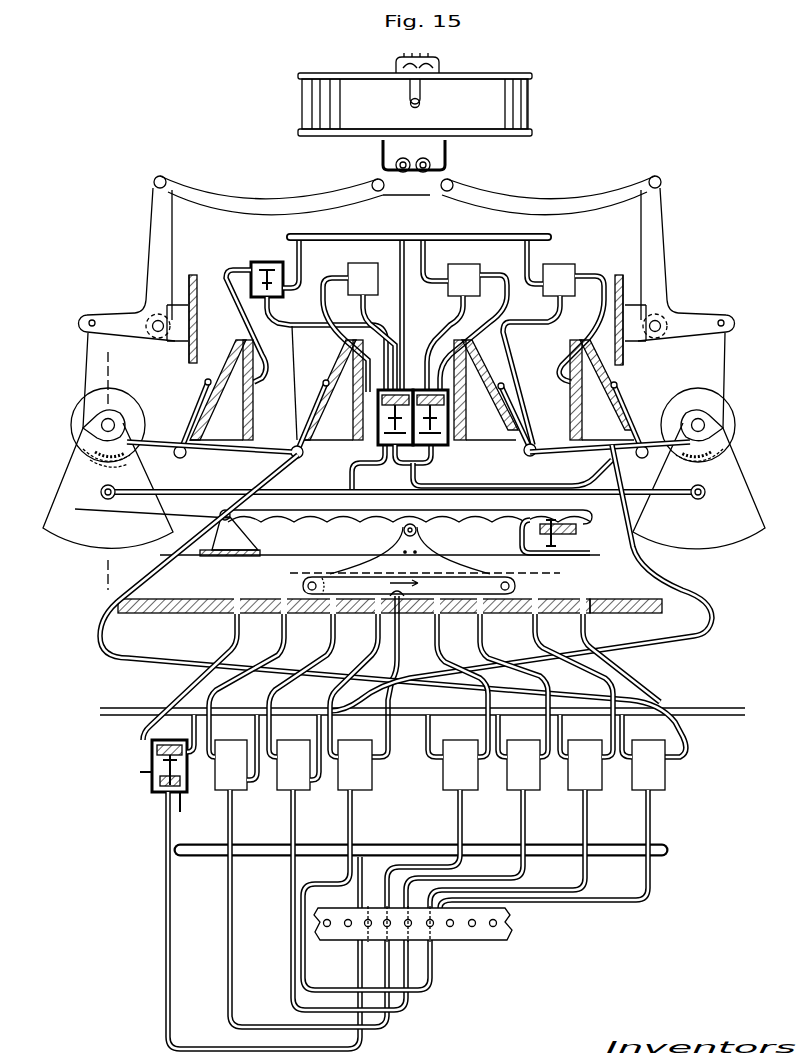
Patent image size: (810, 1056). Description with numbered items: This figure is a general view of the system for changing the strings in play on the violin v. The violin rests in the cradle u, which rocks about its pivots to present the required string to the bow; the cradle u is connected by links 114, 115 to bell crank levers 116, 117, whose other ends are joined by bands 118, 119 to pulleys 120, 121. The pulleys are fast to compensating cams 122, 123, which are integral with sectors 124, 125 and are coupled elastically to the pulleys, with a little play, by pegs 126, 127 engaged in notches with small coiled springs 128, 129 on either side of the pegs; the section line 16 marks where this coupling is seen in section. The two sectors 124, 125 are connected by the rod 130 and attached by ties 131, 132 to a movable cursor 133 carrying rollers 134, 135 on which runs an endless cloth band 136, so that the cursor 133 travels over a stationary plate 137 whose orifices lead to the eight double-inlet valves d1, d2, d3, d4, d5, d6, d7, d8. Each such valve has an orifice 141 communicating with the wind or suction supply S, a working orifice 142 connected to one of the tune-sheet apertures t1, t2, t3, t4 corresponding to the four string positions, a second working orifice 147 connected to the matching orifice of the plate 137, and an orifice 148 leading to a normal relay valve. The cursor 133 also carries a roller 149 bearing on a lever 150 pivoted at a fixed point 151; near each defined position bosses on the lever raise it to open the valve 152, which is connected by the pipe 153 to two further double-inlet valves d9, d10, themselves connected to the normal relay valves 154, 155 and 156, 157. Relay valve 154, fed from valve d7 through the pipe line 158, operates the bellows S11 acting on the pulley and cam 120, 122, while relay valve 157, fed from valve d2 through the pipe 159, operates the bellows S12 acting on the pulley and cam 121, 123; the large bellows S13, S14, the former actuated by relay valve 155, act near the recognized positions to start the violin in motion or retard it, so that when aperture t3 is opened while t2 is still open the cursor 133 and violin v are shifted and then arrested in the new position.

The violin v is at (455, 90).
The cradle u is at (446, 158).
The supply pipe S is at (444, 225).
The link 114 is at (280, 205).
The link 115 is at (545, 205).
The bell crank lever 116 is at (162, 268).
The bell crank lever 117 is at (655, 260).
The band 118 is at (87, 334).
The band 119 is at (726, 334).
The pulley 120 is at (88, 403).
The pulley 121 is at (720, 409).
The compensating cam 122 is at (88, 428).
The compensating cam 123 is at (720, 431).
The sector 124 is at (108, 485).
The sector 125 is at (699, 486).
The peg 126 is at (102, 459).
The peg 127 is at (712, 462).
The coiled spring 128 is at (92, 455).
The coiled spring 129 is at (700, 462).
The rod 130 is at (197, 489).
The tie 131 is at (200, 557).
The tie 132 is at (450, 543).
The cursor 133 is at (330, 573).
The roller 134 is at (303, 586).
The roller 135 is at (613, 599).
The endless band of cloth 136 is at (521, 583).
The stationary plate 137 is at (118, 612).
The orifice 141 is at (180, 798).
The working orifice 142 is at (170, 794).
The working orifice 147 is at (152, 750).
The orifice 148 is at (140, 772).
The roller 149 is at (419, 533).
The lever 150 is at (271, 516).
The fixed pivot point 151 is at (75, 509).
The valve 152 is at (549, 528).
The pipe 153 is at (482, 471).
The normal relay valve 154 is at (255, 264).
The normal relay valve 155 is at (364, 279).
The normal relay valve 156 is at (464, 280).
The normal relay valve 157 is at (559, 280).
The pipe line 158 is at (102, 660).
The pipe 159 is at (665, 637).
The section line 16 is at (108, 471).
The bellows S11 is at (213, 399).
The bellows S12 is at (609, 399).
The large bellows S13 is at (327, 399).
The large bellows S14 is at (495, 398).
The double-inlet valve d1 is at (234, 616).
The double-inlet valve d2 is at (282, 616).
The double-inlet valve d3 is at (331, 616).
The double-inlet valve d4 is at (376, 616).
The double-inlet valve d5 is at (436, 616).
The double-inlet valve d6 is at (479, 616).
The double-inlet valve d7 is at (533, 616).
The double-inlet valve d8 is at (582, 616).
The double-inlet valve d9 is at (378, 440).
The double-inlet valve d10 is at (448, 442).
The aperture t1 is at (366, 926).
The aperture t2 is at (386, 926).
The aperture t3 is at (410, 926).
The aperture t4 is at (432, 926).